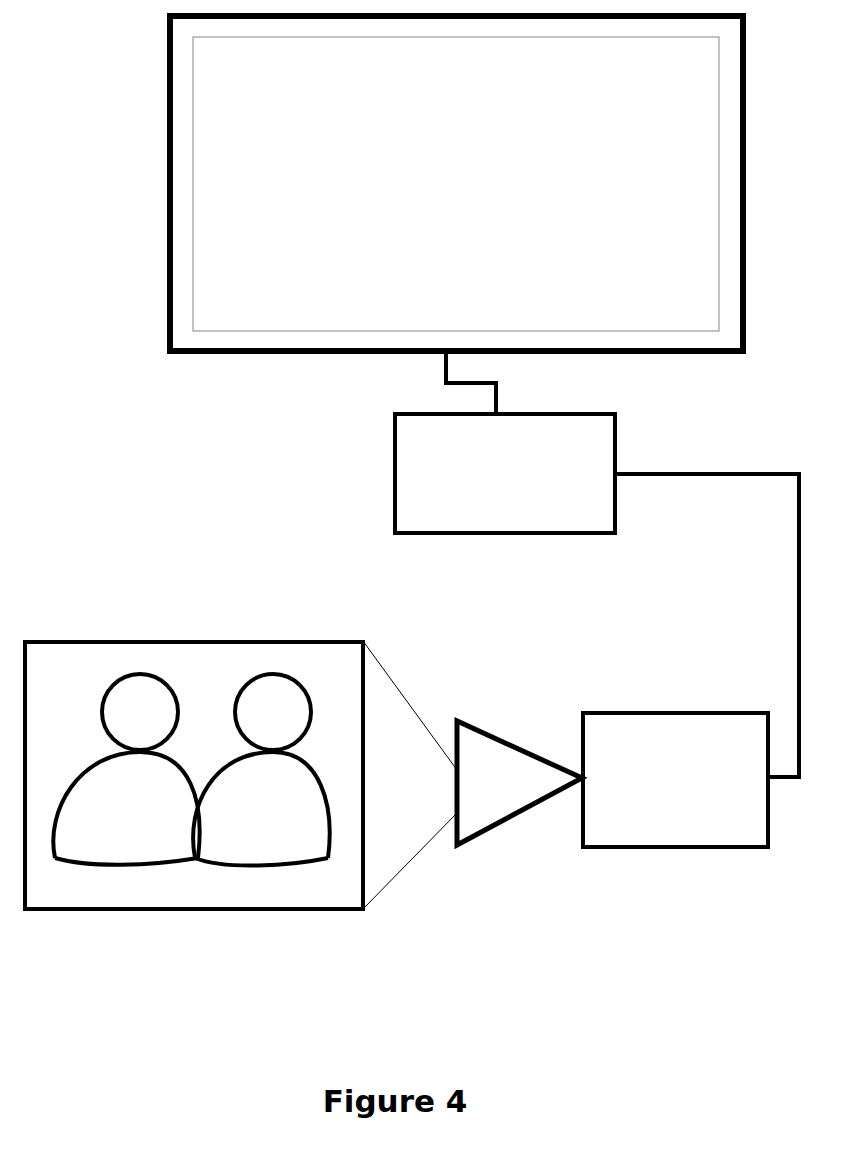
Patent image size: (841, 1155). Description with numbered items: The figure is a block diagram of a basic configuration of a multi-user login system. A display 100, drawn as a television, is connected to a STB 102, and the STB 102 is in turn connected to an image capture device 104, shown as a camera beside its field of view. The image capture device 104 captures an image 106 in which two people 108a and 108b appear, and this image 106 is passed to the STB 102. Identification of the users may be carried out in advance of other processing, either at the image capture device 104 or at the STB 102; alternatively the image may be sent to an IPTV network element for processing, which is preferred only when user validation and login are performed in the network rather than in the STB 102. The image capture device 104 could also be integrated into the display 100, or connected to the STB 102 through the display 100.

The display 100 is at (456, 183).
The STB 102 is at (505, 473).
The image capture device 104 is at (612, 780).
The image 106 is at (360, 641).
The person 108a is at (126, 769).
The person 108b is at (261, 770).